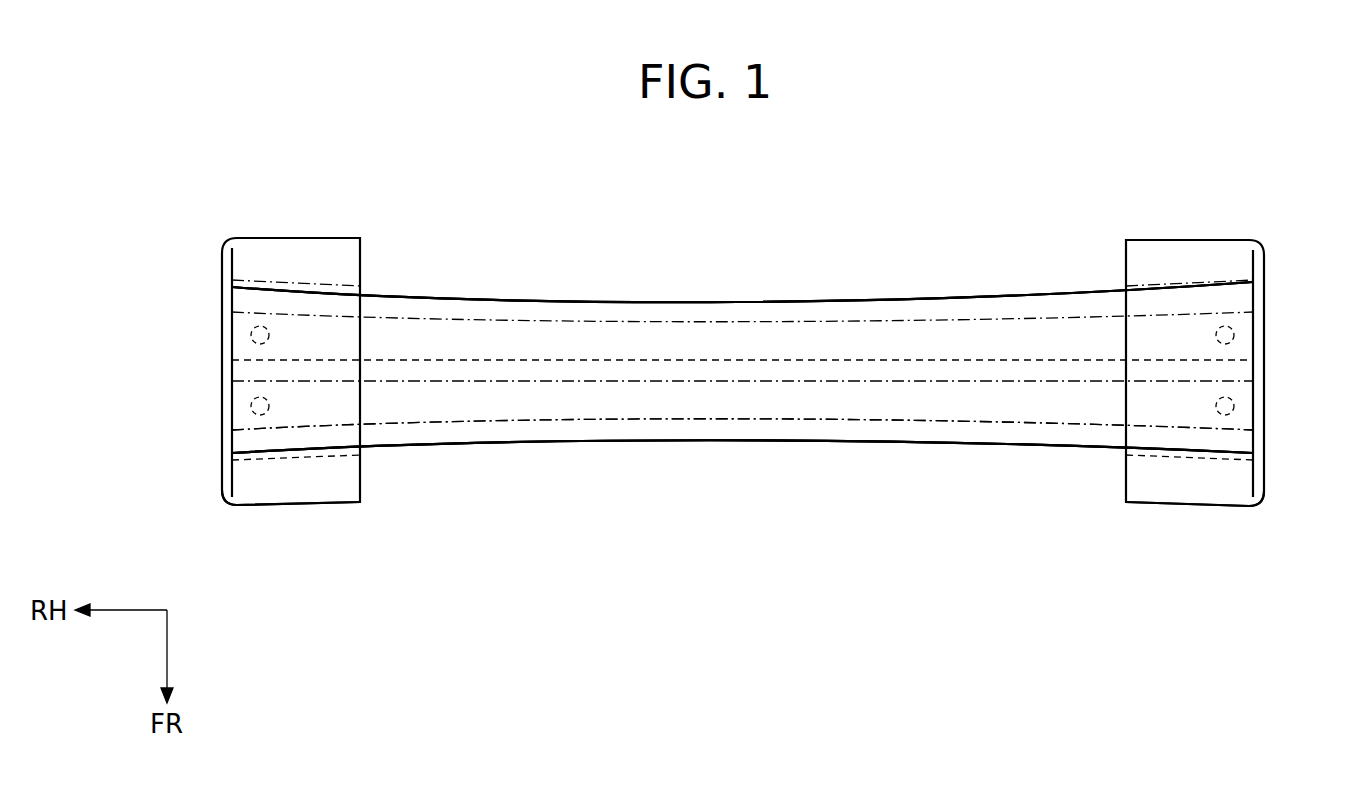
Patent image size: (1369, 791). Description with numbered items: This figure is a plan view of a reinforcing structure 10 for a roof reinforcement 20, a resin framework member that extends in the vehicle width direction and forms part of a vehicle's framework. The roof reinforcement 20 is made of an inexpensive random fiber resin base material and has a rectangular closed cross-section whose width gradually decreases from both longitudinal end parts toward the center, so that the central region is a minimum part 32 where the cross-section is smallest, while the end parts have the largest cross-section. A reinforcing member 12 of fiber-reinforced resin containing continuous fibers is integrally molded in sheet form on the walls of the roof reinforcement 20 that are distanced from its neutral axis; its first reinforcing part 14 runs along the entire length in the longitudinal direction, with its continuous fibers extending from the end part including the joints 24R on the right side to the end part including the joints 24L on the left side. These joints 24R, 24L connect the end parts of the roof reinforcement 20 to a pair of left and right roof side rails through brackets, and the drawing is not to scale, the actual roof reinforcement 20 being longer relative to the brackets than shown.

The reinforcing structure 10 is at (1013, 292).
The reinforcing member 12 is at (610, 343).
The first reinforcing part 14 is at (593, 400).
The roof reinforcement 20 is at (826, 252).
The joints on a right side 24R is at (249, 334).
The joints on a left side 24L is at (1236, 334).
The minimum part 32 is at (749, 441).